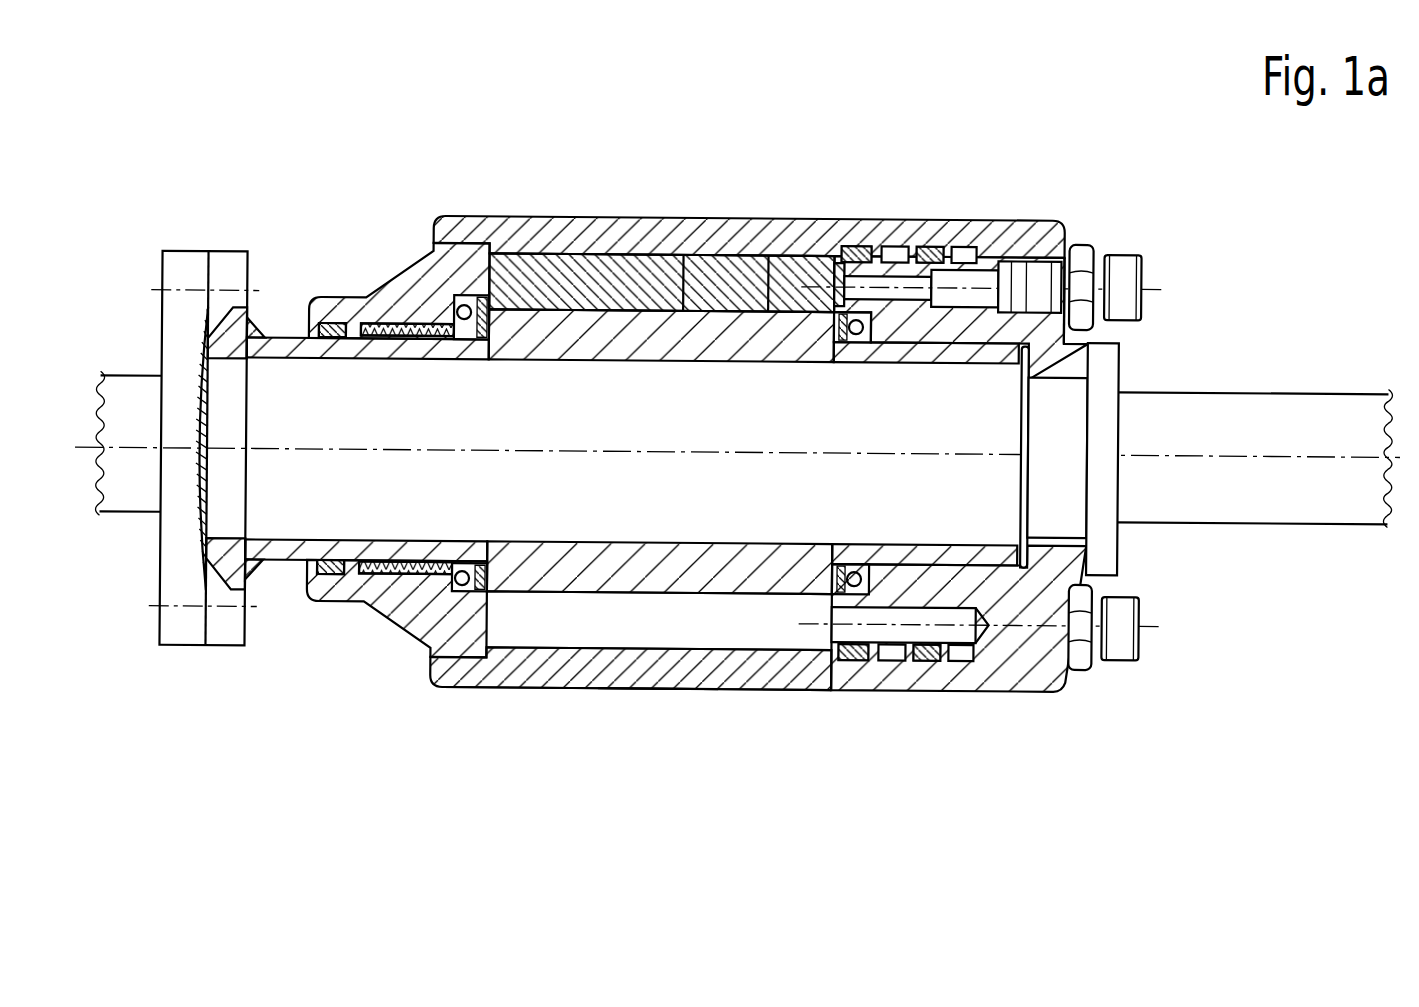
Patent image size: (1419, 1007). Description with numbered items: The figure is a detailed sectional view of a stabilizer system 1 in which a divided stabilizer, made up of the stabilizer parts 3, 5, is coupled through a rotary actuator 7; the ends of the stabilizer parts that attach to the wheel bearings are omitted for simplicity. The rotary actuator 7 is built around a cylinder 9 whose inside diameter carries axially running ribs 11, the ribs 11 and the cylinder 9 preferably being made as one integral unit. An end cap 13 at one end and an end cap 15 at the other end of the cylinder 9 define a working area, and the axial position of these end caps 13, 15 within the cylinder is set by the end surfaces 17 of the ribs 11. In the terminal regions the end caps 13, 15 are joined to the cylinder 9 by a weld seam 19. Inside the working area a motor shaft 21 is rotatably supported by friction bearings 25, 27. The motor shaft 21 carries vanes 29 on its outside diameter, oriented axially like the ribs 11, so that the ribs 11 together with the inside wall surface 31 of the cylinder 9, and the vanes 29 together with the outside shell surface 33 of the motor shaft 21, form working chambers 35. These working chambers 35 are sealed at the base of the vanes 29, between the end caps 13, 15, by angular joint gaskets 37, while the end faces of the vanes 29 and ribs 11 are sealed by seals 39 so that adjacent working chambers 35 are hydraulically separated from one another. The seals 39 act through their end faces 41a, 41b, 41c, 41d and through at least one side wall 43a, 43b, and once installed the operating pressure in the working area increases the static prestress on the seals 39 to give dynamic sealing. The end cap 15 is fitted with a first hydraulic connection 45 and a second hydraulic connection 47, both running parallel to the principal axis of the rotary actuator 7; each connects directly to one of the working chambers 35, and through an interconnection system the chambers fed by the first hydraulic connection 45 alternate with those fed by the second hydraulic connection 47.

The stabilizer system 1 is at (290, 718).
The stabilizer part 3 is at (130, 520).
The stabilizer part 5 is at (1294, 524).
The rotary actuator 7 is at (664, 693).
The cylinder 9 is at (513, 691).
The ribs 11 is at (677, 628).
The end cap 13 is at (447, 303).
The end cap 15 is at (1036, 652).
The end surfaces 17 is at (483, 300).
The weld seam 19 is at (445, 225).
The motor shaft 21 is at (232, 388).
The friction bearing 25 is at (1003, 224).
The friction bearing 27 is at (387, 310).
The vanes 29 is at (487, 290).
The inside wall surface 31 is at (641, 252).
The outside shell surface 33 is at (598, 600).
The working chambers 35 is at (768, 636).
The angular joint gaskets 37 is at (488, 300).
The seals 39 is at (681, 275).
The end face 41a is at (843, 268).
The end face 41b is at (430, 300).
The end face 41c is at (588, 255).
The end face 41d is at (582, 316).
The side wall 43a is at (717, 230).
The side wall 43b is at (767, 250).
The first hydraulic connection 45 is at (1112, 375).
The second hydraulic connection 47 is at (1125, 627).